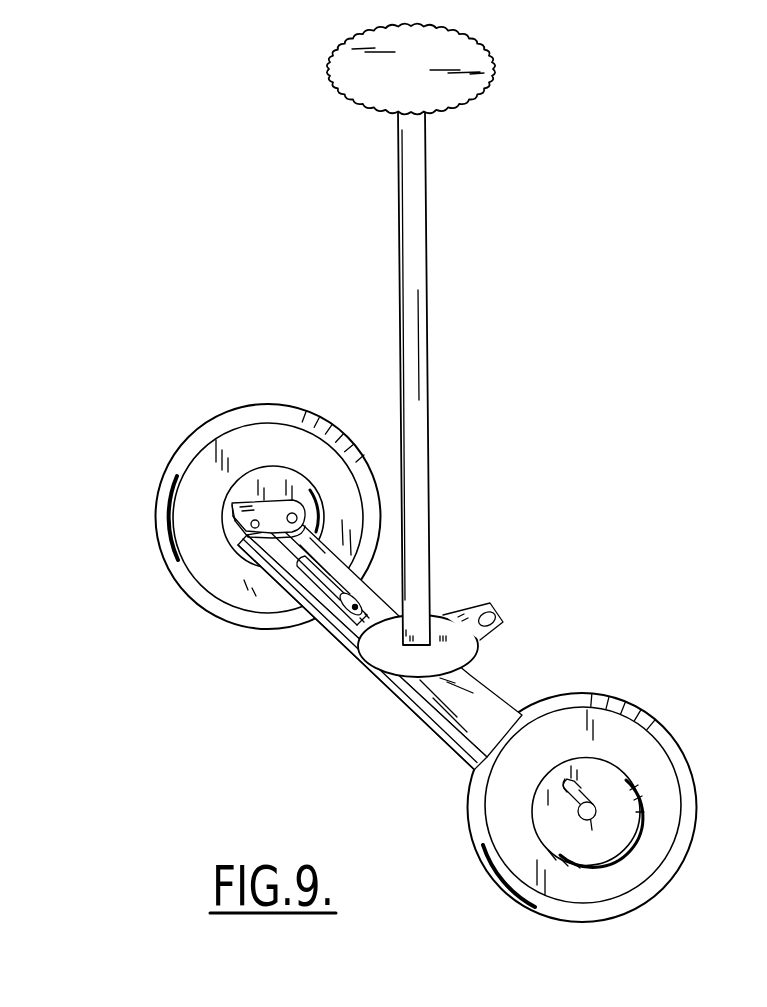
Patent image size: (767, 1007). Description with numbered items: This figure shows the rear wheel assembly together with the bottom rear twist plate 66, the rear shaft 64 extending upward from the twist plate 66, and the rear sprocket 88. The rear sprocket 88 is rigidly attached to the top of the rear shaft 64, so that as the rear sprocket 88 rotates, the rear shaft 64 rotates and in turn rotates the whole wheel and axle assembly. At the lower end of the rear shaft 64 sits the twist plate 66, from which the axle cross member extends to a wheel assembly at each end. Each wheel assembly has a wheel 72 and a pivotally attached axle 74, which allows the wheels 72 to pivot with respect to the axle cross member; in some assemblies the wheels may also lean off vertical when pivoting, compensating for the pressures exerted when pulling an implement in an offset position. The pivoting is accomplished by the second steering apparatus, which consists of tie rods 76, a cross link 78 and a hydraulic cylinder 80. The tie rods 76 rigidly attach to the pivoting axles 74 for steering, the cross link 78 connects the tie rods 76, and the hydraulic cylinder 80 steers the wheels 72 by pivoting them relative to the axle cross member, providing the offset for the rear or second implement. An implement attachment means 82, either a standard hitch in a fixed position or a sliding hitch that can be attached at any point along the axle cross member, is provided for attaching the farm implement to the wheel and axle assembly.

The rear shaft 64 is at (427, 248).
The base 66 is at (478, 655).
The wheel 72 is at (242, 405).
The axle 74 is at (294, 502).
The tie rods 76 is at (232, 517).
The cross link 78 is at (430, 728).
The hydraulic cylinder 80 is at (302, 585).
The implement attachment means 82 is at (500, 610).
The rear sprocket 88 is at (493, 72).